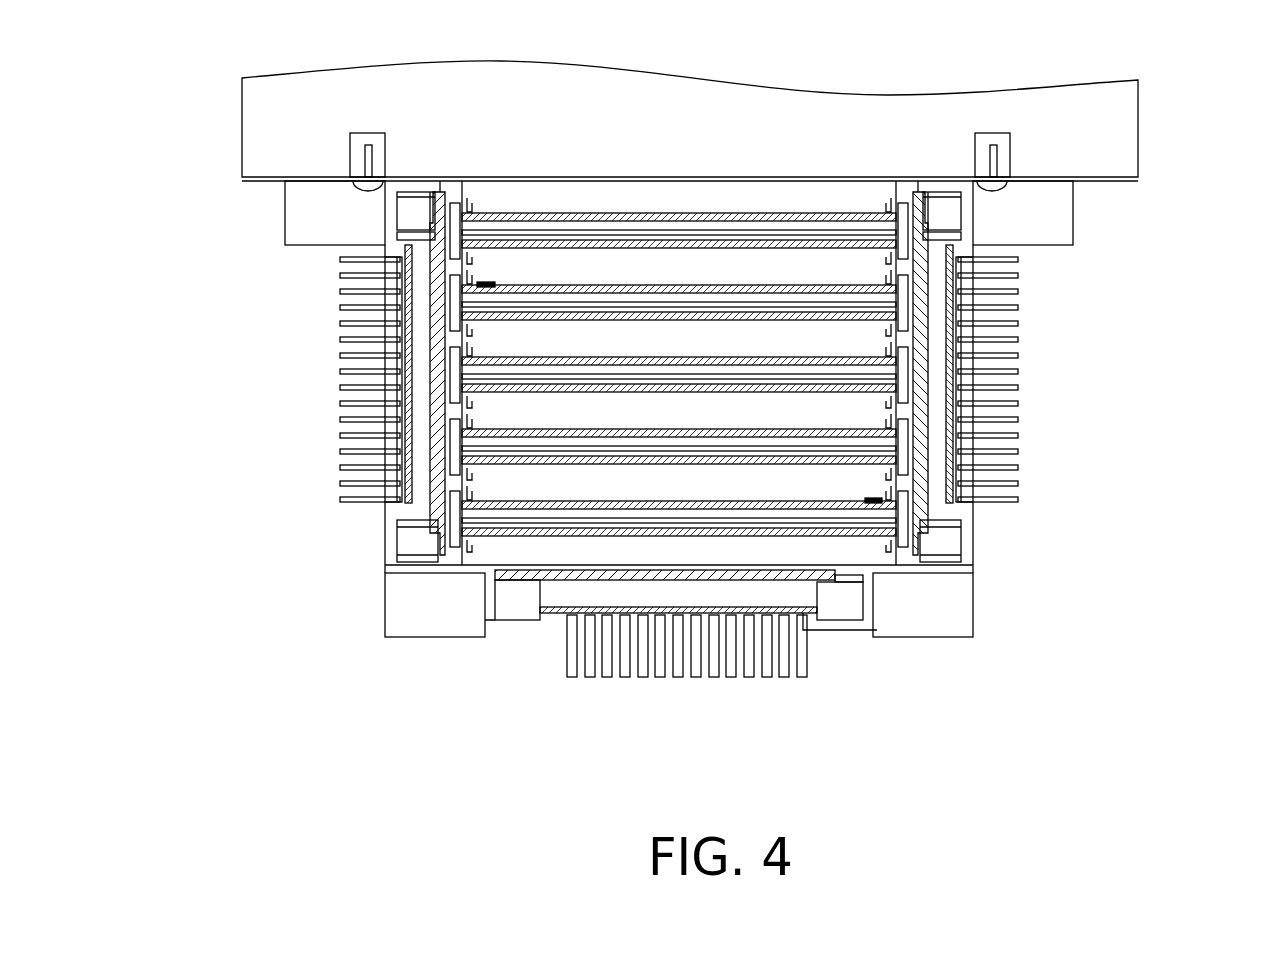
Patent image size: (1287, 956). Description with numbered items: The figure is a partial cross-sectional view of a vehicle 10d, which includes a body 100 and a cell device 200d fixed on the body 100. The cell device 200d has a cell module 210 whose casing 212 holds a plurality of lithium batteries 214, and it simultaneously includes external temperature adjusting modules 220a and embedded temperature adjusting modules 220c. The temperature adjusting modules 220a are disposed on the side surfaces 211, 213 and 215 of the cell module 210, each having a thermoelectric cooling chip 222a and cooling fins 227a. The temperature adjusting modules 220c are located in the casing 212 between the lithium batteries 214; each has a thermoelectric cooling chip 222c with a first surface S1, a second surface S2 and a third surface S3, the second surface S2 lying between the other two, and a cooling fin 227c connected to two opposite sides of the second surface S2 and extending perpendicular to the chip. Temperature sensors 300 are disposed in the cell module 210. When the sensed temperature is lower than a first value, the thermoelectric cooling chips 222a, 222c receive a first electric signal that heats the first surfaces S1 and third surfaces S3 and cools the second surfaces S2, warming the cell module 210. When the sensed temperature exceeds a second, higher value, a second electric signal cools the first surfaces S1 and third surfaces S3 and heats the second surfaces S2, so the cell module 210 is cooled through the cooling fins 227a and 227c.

The body 100 is at (1127, 130).
The vehicle 10d is at (1223, 759).
The cell device 200d is at (629, 409).
The cell module 210 is at (200, 440).
The side surface 211 is at (928, 222).
The casing 212 is at (440, 477).
The side surface 213 is at (430, 246).
The lithium battery 214 is at (470, 475).
The side surface 215 is at (843, 598).
The temperature adjusting module 220a is at (318, 350).
The temperature adjusting module 220c is at (859, 426).
The thermoelectric cooling chip 222a is at (410, 318).
The thermoelectric cooling chip 222c is at (500, 700).
The cooling fin 227a is at (345, 265).
The cooling fin 227c is at (477, 413).
The temperature sensor 300 is at (487, 282).
The first surface S1 is at (920, 503).
The second surface S2 is at (953, 427).
The third surface S3 is at (518, 510).